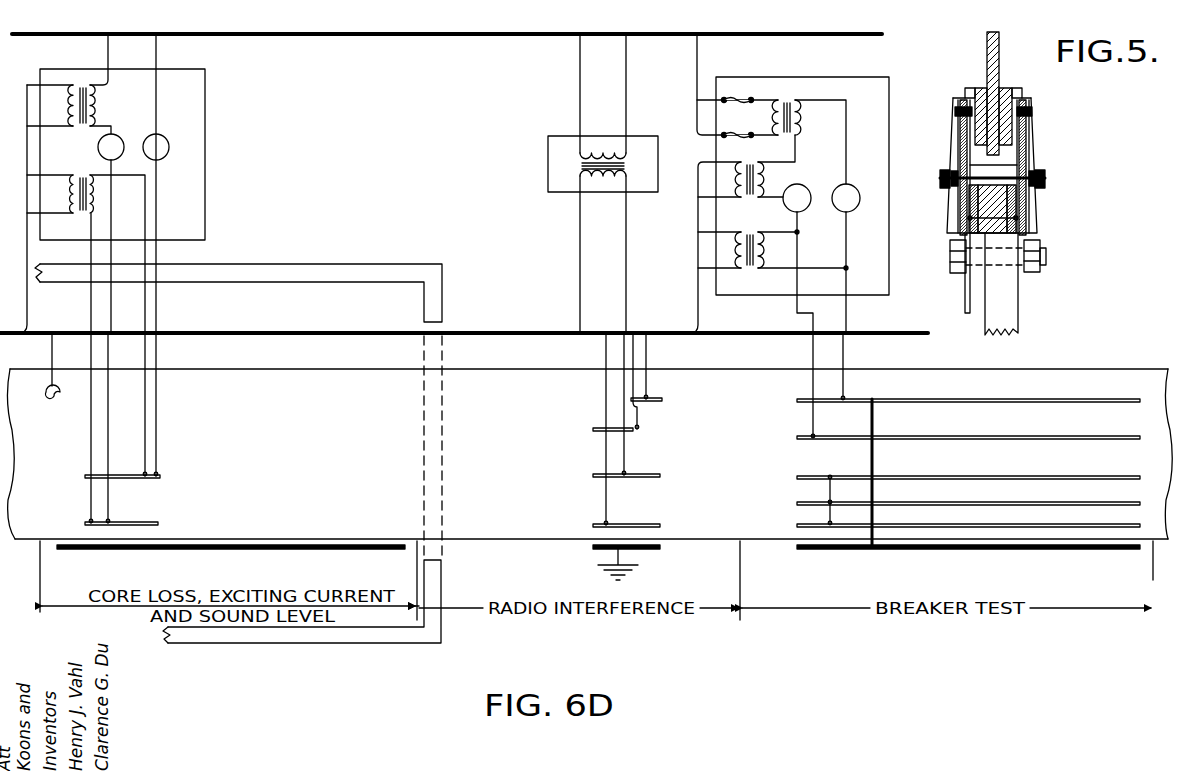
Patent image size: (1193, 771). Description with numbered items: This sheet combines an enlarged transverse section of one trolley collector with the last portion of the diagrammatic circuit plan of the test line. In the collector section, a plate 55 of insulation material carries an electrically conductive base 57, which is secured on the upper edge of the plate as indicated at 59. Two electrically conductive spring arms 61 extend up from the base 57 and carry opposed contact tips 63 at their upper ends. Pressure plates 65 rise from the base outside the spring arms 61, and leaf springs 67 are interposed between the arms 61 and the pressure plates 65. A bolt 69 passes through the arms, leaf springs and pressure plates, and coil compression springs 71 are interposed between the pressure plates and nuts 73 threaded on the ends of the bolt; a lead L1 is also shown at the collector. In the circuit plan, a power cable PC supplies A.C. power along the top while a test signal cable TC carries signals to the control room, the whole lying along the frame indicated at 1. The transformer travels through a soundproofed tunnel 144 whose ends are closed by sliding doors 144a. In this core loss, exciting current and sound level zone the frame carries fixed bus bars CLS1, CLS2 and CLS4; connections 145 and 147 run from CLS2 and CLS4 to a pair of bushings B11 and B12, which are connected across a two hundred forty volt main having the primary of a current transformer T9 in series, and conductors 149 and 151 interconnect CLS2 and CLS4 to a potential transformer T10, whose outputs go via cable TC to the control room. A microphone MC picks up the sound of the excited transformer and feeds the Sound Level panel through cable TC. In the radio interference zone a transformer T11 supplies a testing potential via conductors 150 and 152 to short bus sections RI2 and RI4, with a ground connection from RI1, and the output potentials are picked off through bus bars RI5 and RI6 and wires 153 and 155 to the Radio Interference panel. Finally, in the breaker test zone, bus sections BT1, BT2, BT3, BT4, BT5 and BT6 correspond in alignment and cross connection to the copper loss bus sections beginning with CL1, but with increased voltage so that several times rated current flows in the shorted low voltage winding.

In FIG. 6D, the power cable PC is at (335, 36).
In FIG. 6D, the test signal cable TC is at (292, 332).
In FIG. 6D, the current transformer T9 is at (80, 124).
In FIG. 6D, the potential transformer T10 is at (78, 216).
In FIG. 6D, the transformer T11 is at (622, 164).
In FIG. 6D, the bushing B11 is at (118, 134).
In FIG. 6D, the bushing B12 is at (163, 136).
In FIG. 6D, the tunnel 144 is at (254, 264).
In FIG. 6D, the sliding doors 144a is at (447, 555).
In FIG. 6D, the test panel 1 is at (27, 542).
In FIG. 6D, the microphone MC is at (48, 392).
In FIG. 6D, the connection 145 is at (108, 445).
In FIG. 6D, the connection 147 is at (156, 434).
In FIG. 6D, the conductor 149 is at (91, 434).
In FIG. 6D, the conductor 151 is at (144, 412).
In FIG. 6D, the conductor 150 is at (606, 386).
In FIG. 6D, the conductor 152 is at (624, 452).
In FIG. 6D, the wire 153 is at (650, 352).
In FIG. 6D, the wire 155 is at (640, 420).
In FIG. 6D, the fixed bus bar CLS1 is at (133, 550).
In FIG. 6D, the fixed bus bar CLS2 is at (158, 522).
In FIG. 6D, the fixed bus bar CLS4 is at (160, 478).
In FIG. 6D, the ground bus section RI1 is at (650, 552).
In FIG. 6D, the short bus section RI2 is at (640, 524).
In FIG. 6D, the short bus section RI4 is at (660, 475).
In FIG. 6D, the bus bar RI5 is at (597, 430).
In FIG. 6D, the bus bar RI6 is at (662, 401).
In FIG. 6D, the bus section BT1 is at (978, 549).
In FIG. 6D, the bus section BT2 is at (975, 525).
In FIG. 6D, the bus section BT3 is at (980, 503).
In FIG. 6D, the bus section BT4 is at (980, 478).
In FIG. 6D, the bus section BT5 is at (972, 438).
In FIG. 6D, the bus section BT6 is at (965, 400).
In FIG. 5, the bus section CL1 is at (997, 54).
In FIG. 5, the spring arms 61 is at (965, 92).
In FIG. 5, the contact tips 63 is at (981, 88).
In FIG. 5, the pressure plates 65 is at (957, 142).
In FIG. 5, the leaf springs 67 is at (968, 203).
In FIG. 5, the bolt 69 is at (1003, 178).
In FIG. 5, the coil compression springs 71 is at (952, 169).
In FIG. 5, the nuts 73 is at (945, 184).
In FIG. 5, the securing point 59 is at (951, 257).
In FIG. 5, the base 57 is at (992, 236).
In FIG. 5, the plate 55 is at (1010, 318).
In FIG. 5, the lead L1 is at (965, 306).